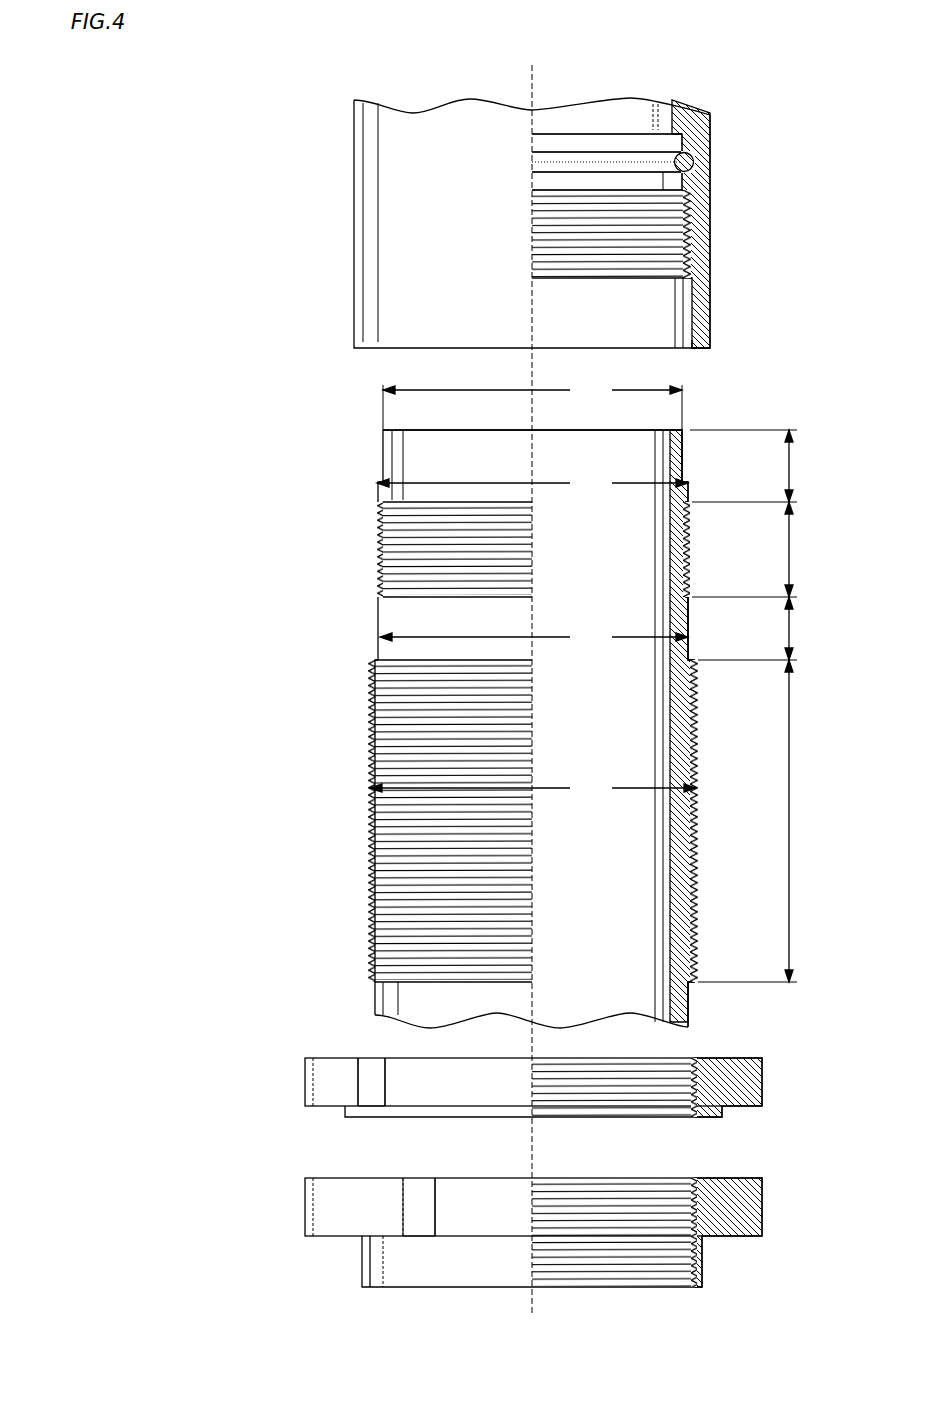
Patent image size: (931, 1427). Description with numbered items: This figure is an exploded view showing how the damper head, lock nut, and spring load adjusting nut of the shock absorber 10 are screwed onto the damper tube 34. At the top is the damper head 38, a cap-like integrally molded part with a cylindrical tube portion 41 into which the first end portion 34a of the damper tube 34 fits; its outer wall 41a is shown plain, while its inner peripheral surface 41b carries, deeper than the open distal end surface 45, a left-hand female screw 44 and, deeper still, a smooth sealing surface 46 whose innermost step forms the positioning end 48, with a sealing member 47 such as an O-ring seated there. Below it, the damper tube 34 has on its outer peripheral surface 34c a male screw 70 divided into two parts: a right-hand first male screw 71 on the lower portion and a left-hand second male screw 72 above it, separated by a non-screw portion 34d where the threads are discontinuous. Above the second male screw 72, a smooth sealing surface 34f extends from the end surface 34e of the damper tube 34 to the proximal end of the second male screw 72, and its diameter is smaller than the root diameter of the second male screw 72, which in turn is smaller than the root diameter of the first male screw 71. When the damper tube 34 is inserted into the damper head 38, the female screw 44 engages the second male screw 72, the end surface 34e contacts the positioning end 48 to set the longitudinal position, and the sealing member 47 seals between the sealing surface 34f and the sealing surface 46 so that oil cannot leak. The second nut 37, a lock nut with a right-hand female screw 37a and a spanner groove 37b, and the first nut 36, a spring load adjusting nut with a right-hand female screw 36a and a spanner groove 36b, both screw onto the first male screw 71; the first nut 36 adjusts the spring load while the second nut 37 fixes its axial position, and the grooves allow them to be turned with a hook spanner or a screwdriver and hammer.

The shock absorber 10 is at (197, 163).
The damper head 38 is at (354, 209).
The tube portion 41 is at (683, 122).
The outer surface of housing 41a is at (403, 299).
The inner peripheral surface 41b is at (655, 307).
The female screw 44 is at (647, 245).
The open distal end surface 45 is at (702, 350).
The sealing surface 46 is at (596, 181).
The sealing member 47 is at (695, 160).
The positioning end 48 is at (672, 105).
The damper tube 34 is at (370, 993).
The first end portion 34a is at (558, 442).
The outer peripheral surface 34c is at (690, 1002).
The non-screw portion 34d is at (690, 623).
The end surface 34e is at (677, 430).
The sealing surface 34f is at (682, 462).
The male screw 70 is at (280, 553).
The first male screw 71 is at (455, 750).
The second male screw 72 is at (433, 537).
The second nut 37 is at (305, 1085).
The female screw 37a is at (622, 1080).
The spanner groove 37b is at (375, 1075).
The first nut 36 is at (305, 1205).
The female screw 36a is at (625, 1230).
The spanner groove 36b is at (420, 1195).